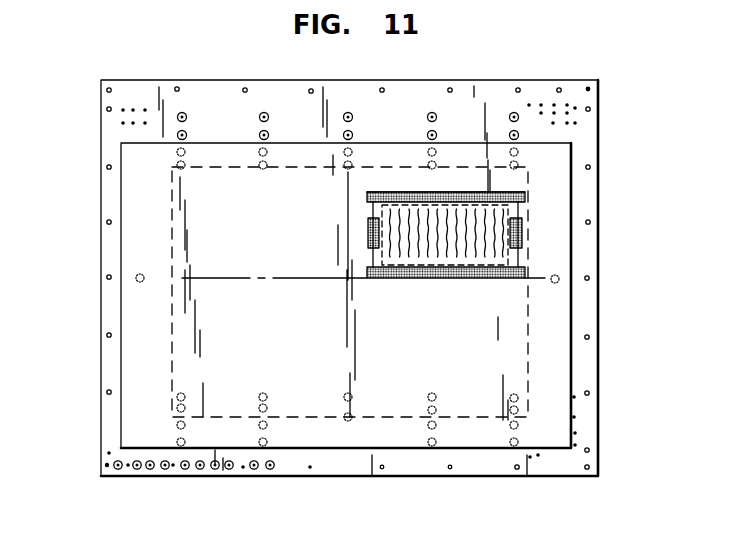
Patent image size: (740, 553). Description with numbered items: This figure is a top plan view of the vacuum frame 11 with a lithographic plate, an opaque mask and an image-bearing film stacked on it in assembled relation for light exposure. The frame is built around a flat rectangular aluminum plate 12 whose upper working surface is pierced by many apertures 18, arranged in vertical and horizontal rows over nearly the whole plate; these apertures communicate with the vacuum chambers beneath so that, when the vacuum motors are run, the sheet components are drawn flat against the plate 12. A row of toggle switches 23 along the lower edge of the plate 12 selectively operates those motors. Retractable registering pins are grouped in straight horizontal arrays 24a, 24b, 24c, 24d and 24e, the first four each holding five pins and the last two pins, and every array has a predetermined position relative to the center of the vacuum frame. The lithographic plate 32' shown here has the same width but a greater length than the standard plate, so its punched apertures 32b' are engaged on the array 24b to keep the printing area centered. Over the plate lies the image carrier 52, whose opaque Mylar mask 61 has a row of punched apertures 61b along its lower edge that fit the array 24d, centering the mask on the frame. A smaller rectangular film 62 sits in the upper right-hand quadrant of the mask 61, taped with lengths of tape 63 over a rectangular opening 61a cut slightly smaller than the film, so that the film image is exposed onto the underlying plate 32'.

The vacuum frame 11 is at (603, 77).
The plate 12 is at (595, 197).
The apertures 18 is at (145, 100).
The toggle switches 23 is at (148, 478).
The array of retractable pins 24a is at (207, 143).
The array of retractable pins 24b is at (184, 134).
The array of retractable pins 24c is at (184, 118).
The array of retractable pins 24d is at (182, 112).
The array of retractable pins 24e is at (135, 280).
The lithographic plate 32' is at (401, 468).
The apertures 32b' is at (355, 378).
The image carrier 52 is at (118, 247).
The opaque mask 61 is at (128, 310).
The rectangular opening 61a is at (442, 202).
The apertures 61b is at (513, 442).
The film 62 is at (373, 253).
The tape 63 is at (368, 226).